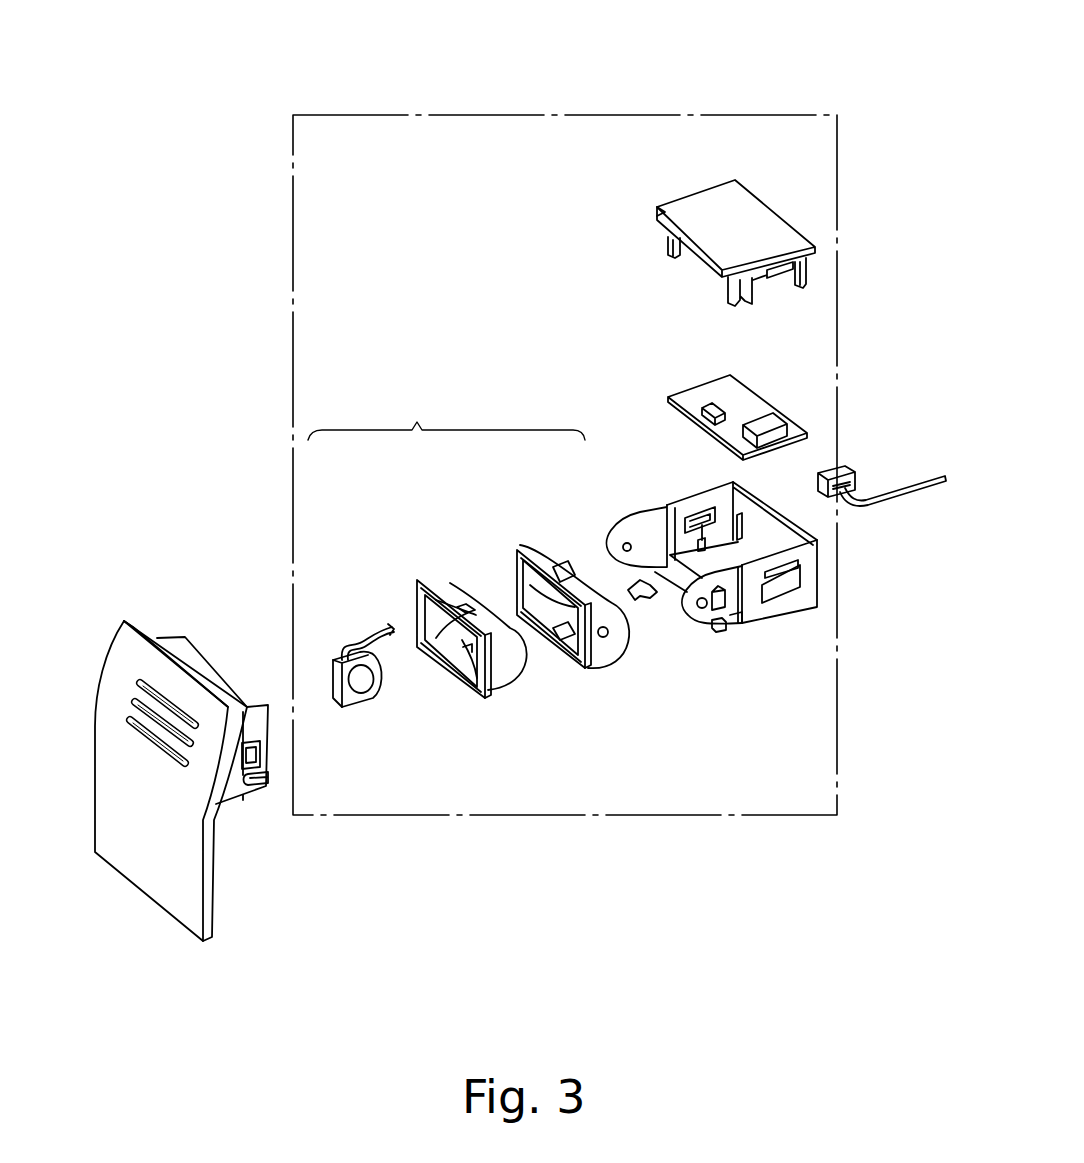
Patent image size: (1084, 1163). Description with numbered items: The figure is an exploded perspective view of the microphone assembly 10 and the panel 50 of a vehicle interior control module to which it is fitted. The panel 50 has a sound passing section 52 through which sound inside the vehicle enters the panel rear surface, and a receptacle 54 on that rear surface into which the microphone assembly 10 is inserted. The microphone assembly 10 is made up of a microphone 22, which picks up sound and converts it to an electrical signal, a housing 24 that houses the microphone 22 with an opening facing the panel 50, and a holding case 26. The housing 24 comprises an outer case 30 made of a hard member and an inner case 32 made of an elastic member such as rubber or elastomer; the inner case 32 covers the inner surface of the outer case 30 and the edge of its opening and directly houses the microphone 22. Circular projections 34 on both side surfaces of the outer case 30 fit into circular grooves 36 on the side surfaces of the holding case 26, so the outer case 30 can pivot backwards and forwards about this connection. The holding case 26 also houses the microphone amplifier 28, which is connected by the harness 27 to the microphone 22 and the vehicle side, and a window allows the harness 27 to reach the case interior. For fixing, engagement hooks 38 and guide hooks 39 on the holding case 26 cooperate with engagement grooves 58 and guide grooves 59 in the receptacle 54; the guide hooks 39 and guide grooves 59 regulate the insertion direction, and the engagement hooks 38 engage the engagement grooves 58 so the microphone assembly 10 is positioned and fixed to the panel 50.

The microphone assembly 10 is at (470, 114).
The microphone 22 is at (335, 653).
The housing 24 is at (446, 417).
The holding case 26 is at (765, 615).
The harness 27 is at (897, 498).
The microphone amplifier 28 is at (750, 403).
The outer case 30 is at (527, 547).
The inner case 32 is at (444, 583).
The circular projections 34 is at (605, 640).
The circular grooves 36 is at (688, 618).
The engagement hooks 38 is at (705, 627).
The guide hooks 39 is at (722, 628).
The panel 50 is at (167, 878).
The sound passing section 52 is at (135, 707).
The receptacle 54 is at (260, 787).
The engagement grooves 58 is at (244, 700).
The guide grooves 59 is at (250, 785).